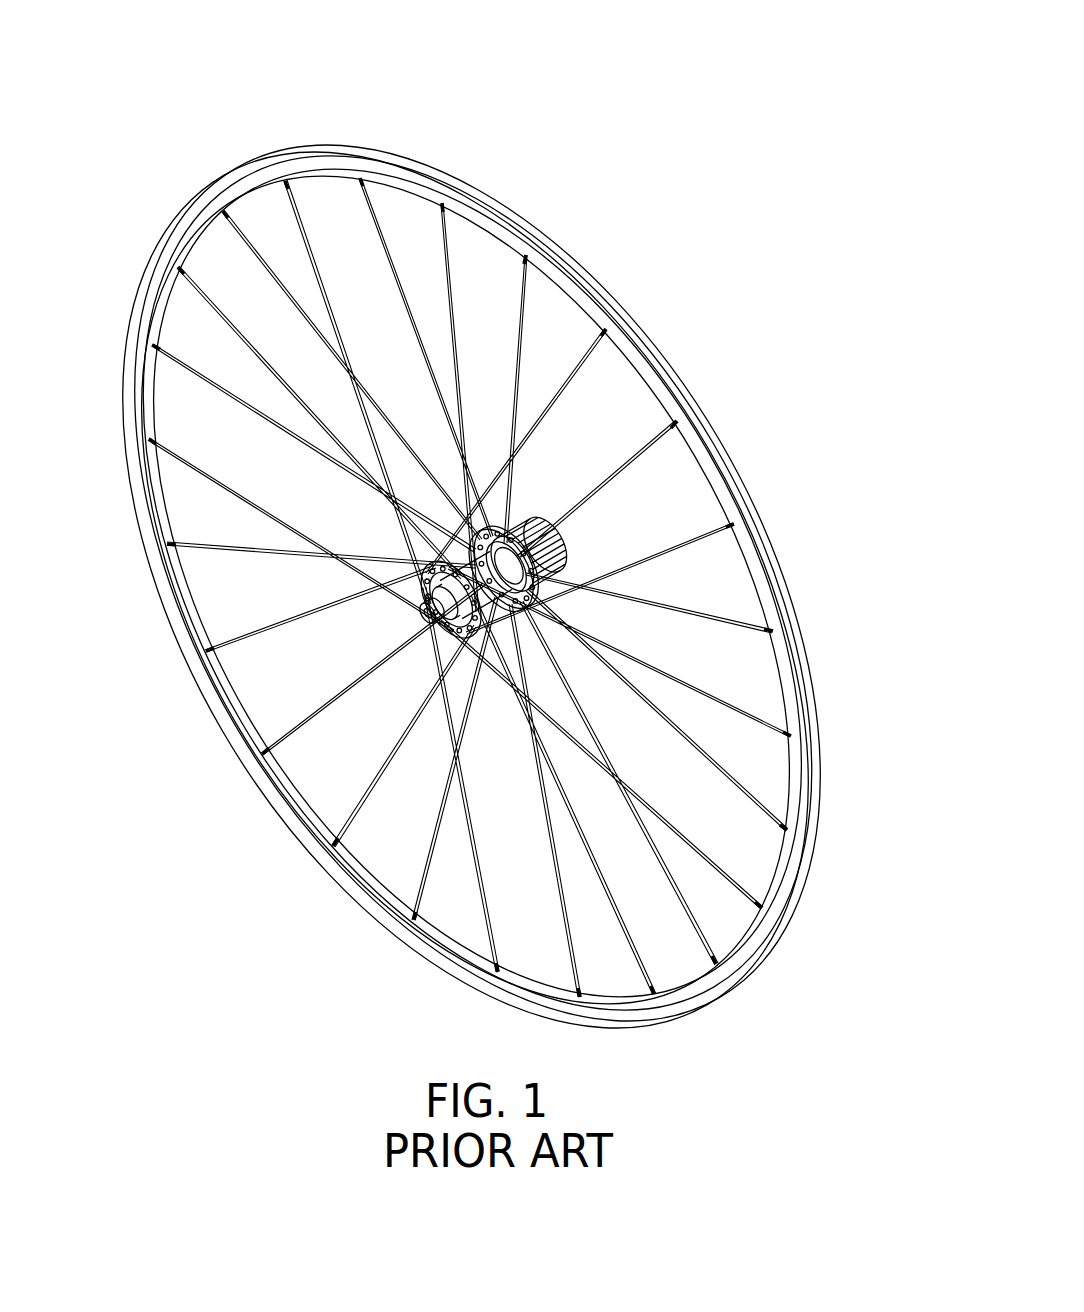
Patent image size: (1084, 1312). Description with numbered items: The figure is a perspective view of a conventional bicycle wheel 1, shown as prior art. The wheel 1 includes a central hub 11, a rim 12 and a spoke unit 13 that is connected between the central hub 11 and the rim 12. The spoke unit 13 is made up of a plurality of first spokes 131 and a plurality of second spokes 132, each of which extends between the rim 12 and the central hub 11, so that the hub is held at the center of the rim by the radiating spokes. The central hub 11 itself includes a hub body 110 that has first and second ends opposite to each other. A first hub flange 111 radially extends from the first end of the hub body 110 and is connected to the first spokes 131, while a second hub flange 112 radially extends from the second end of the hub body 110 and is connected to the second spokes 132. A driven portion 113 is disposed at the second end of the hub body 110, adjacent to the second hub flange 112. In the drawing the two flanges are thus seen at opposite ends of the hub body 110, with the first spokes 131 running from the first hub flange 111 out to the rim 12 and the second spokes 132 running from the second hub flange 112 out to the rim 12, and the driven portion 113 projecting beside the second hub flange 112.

The bicycle wheel 1 is at (481, 586).
The central hub 11 is at (522, 622).
The hub body 110 is at (493, 573).
The first hub flange 111 is at (467, 600).
The second hub flange 112 is at (550, 560).
The driven portion 113 is at (518, 557).
The rim 12 is at (683, 400).
The spoke unit 13 is at (444, 511).
The first spokes 131 is at (458, 235).
The second spokes 132 is at (380, 221).